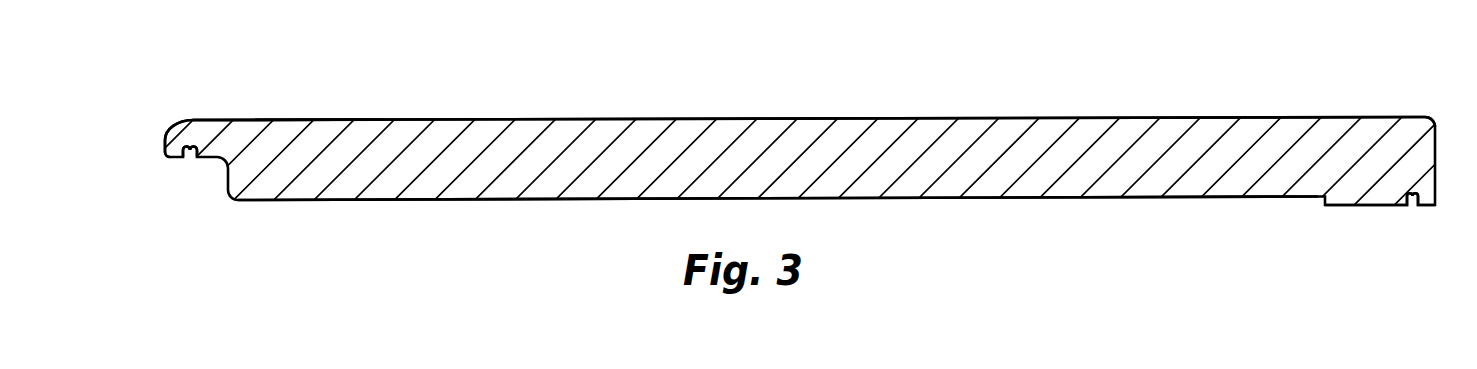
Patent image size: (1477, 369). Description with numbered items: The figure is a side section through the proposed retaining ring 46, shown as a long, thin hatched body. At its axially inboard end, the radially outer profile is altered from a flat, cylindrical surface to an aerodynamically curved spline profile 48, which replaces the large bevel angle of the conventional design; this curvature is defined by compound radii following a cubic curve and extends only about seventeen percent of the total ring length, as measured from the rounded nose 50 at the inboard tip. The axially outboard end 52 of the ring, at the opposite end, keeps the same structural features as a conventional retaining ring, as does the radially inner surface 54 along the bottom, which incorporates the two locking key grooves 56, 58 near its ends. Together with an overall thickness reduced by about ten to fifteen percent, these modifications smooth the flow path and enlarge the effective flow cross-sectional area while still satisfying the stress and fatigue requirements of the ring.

The retaining ring 46 is at (709, 96).
The spline profile 48 is at (383, 118).
The rounded nose 50 is at (170, 141).
The axially outboard end 52 is at (1248, 116).
The radially inner surface 54 is at (1095, 198).
The locking key groove 56 is at (1417, 206).
The locking key groove 58 is at (192, 153).